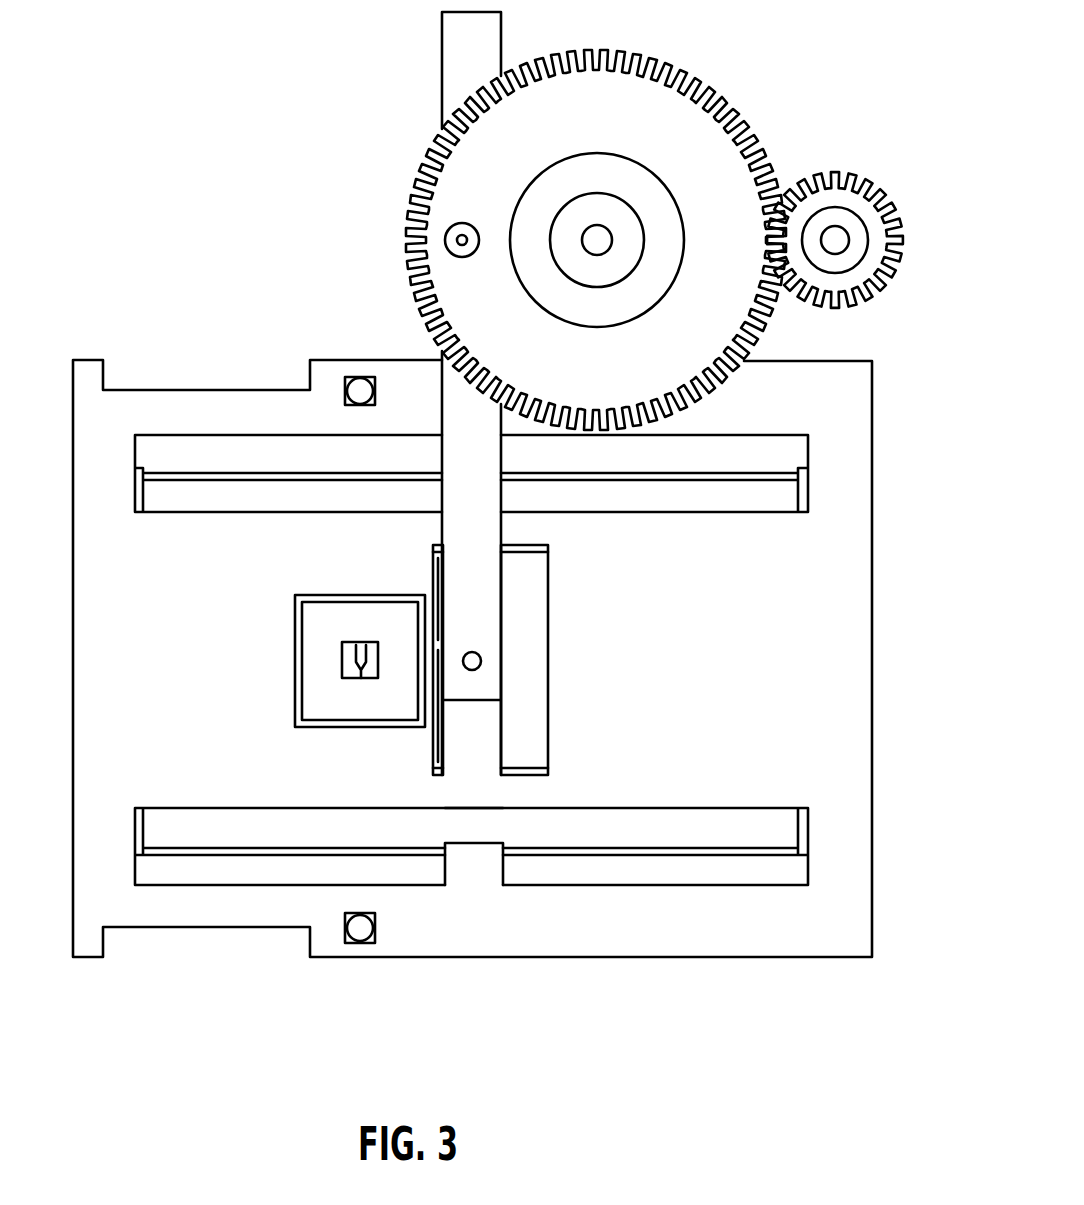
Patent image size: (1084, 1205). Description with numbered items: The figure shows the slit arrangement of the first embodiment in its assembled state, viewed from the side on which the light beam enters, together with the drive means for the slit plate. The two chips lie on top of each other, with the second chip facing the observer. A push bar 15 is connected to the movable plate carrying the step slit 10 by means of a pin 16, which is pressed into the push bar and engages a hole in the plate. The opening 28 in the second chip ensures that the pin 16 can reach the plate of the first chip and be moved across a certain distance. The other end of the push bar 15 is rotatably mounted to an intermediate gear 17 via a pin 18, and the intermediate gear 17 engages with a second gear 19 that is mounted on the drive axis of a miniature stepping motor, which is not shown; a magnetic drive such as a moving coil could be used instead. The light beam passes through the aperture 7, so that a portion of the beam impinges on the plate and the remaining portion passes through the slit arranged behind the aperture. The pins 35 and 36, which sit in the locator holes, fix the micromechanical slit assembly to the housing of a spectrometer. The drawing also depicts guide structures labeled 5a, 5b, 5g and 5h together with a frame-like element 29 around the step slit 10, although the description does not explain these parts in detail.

The push bar 15 is at (442, 53).
The intermediate gear 17 is at (688, 103).
The pin 18 is at (445, 240).
The second gear 19 is at (892, 229).
The pin 35 is at (357, 377).
The pin 36 is at (360, 945).
The guide rail 5a is at (220, 473).
The guide rail 5b is at (737, 473).
The guide rail 5g is at (217, 848).
The guide rail 5h is at (730, 848).
The opening 28 is at (530, 619).
The pin 16 is at (482, 661).
The holder frame 29 is at (309, 625).
The step slit 10 is at (348, 667).
The aperture 7 is at (369, 676).